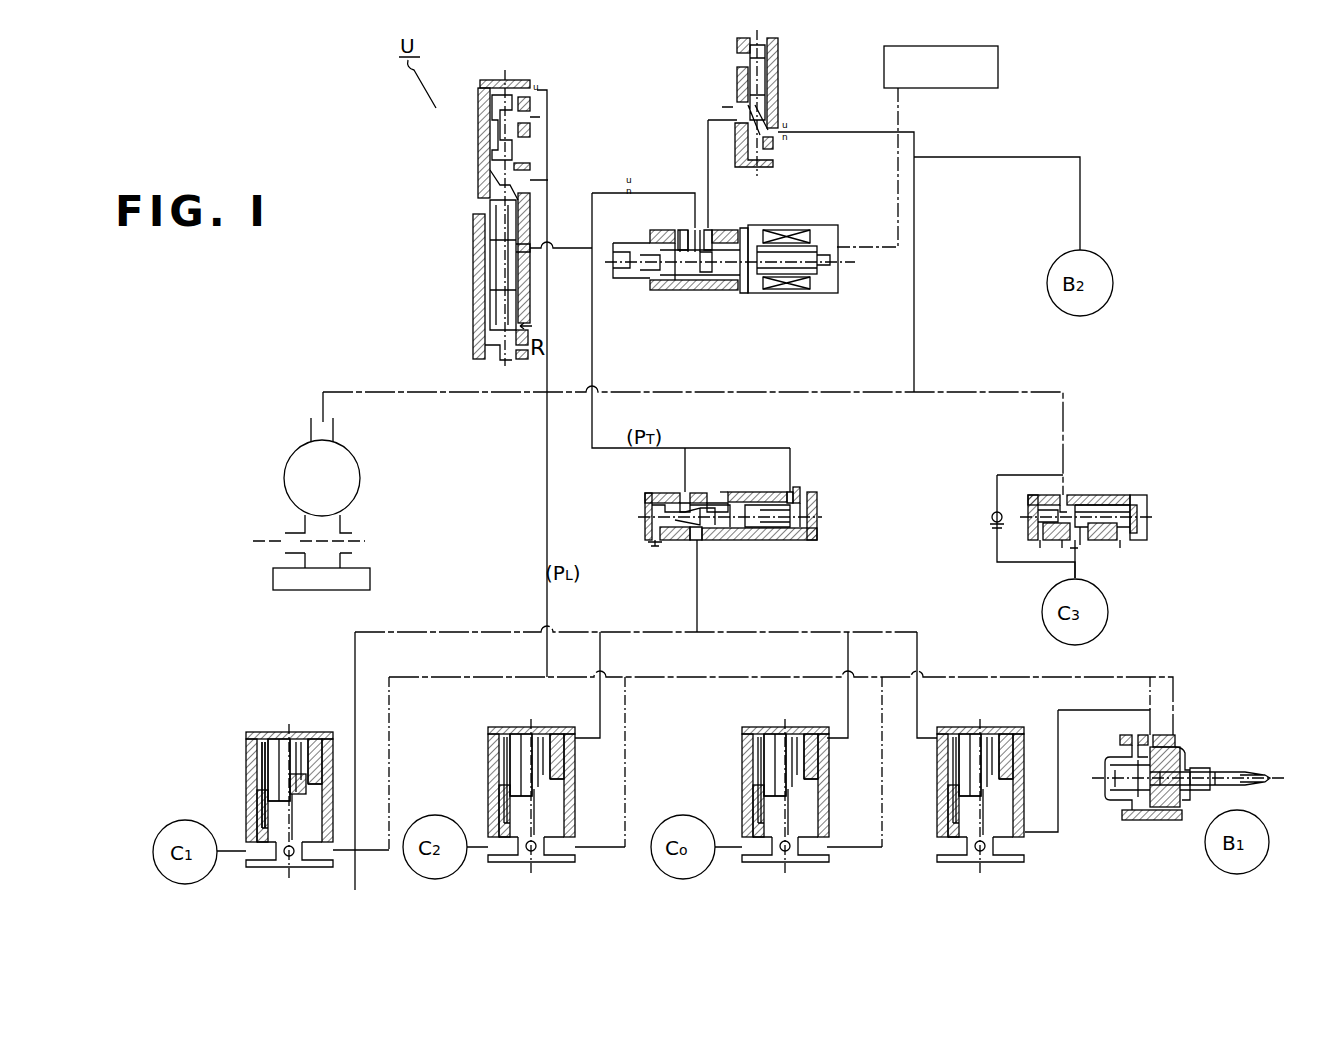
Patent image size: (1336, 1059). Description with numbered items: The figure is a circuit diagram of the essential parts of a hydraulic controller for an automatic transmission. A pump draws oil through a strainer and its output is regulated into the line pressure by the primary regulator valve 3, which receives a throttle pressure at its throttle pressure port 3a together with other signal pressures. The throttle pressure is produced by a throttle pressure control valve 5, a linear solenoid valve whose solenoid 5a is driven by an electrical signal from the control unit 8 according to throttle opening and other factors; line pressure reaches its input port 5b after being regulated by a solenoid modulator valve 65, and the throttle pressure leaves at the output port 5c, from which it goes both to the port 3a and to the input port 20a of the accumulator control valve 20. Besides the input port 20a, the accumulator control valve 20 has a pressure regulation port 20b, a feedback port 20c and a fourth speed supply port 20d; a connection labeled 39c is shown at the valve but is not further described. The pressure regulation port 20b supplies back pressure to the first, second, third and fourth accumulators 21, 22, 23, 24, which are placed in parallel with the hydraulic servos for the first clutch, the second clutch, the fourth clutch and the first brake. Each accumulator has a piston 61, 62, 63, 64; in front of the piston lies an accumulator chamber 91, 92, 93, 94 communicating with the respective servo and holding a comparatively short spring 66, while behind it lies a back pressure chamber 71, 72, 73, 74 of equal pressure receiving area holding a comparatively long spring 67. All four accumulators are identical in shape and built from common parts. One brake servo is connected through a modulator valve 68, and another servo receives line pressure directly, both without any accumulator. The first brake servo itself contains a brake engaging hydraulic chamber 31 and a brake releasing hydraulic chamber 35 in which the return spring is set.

The primary regulator valve 3 is at (476, 110).
The throttle pressure port 3a is at (534, 252).
The throttle pressure control valve 5 is at (792, 224).
The solenoid 5a is at (806, 286).
The input port 5b is at (710, 228).
The output port 5c is at (688, 228).
The control unit 8 is at (1000, 76).
The accumulator control valve 20 is at (820, 505).
The input port 20a is at (686, 492).
The pressure regulation port 20b is at (704, 545).
The feedback port 20c is at (788, 490).
The fourth speed supply port 20d is at (726, 500).
The port 39c is at (725, 492).
The first accumulator 21 is at (277, 779).
The second accumulator 22 is at (520, 778).
The third accumulator 23 is at (776, 779).
The fourth accumulator 24 is at (974, 780).
The brake engaging hydraulic chamber 31 is at (1174, 735).
The brake releasing hydraulic chamber 35 is at (1192, 758).
The piston 61 is at (228, 812).
The piston 62 is at (471, 805).
The piston 63 is at (360, 480).
The piston 64 is at (925, 811).
The solenoid modulator valve 65 is at (786, 98).
The short springs 66 is at (332, 787).
The long springs 67 is at (221, 782).
The modulator valve 68 is at (1096, 494).
The back pressure chamber 71 is at (271, 741).
The back pressure chamber 72 is at (516, 739).
The back pressure chamber 73 is at (789, 740).
The back pressure chamber 74 is at (963, 741).
The accumulator chamber 91 is at (334, 817).
The accumulator chamber 92 is at (570, 812).
The accumulator chamber 93 is at (727, 807).
The accumulator chamber 94 is at (1019, 812).